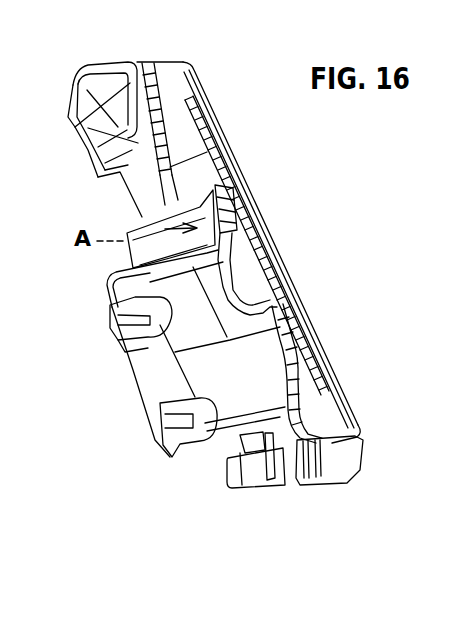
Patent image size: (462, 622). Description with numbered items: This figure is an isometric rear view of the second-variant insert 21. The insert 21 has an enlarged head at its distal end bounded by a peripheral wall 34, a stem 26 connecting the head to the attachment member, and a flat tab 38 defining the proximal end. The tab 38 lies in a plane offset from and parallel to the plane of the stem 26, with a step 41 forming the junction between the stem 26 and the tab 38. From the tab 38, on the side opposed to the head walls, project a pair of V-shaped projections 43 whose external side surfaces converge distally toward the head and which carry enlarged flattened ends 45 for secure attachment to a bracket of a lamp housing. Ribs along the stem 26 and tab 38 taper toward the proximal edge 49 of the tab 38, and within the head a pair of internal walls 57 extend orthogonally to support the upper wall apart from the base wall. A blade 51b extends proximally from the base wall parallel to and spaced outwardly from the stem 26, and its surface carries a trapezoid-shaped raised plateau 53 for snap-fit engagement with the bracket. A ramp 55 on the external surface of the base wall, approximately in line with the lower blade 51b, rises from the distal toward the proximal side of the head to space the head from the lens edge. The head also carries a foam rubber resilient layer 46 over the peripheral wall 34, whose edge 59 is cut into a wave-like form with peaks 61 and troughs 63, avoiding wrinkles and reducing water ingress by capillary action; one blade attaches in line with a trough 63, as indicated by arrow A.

The insert 21 is at (230, 87).
The peripheral wall 34 is at (118, 76).
The internal walls 57 is at (107, 122).
The raised plateau 53 is at (217, 187).
The trough 63 is at (233, 203).
The resilient layer 46 is at (257, 260).
The peak 61 is at (228, 295).
The step 41 is at (128, 273).
The V-shaped projections 43 is at (122, 310).
The proximal edge 49 is at (148, 325).
The enlarged flattened ends 45 is at (133, 342).
The flat tab 38 is at (157, 395).
The stem 26 is at (233, 421).
The edge 59 is at (298, 370).
The ramp 55 is at (333, 457).
The blade 51b is at (240, 473).